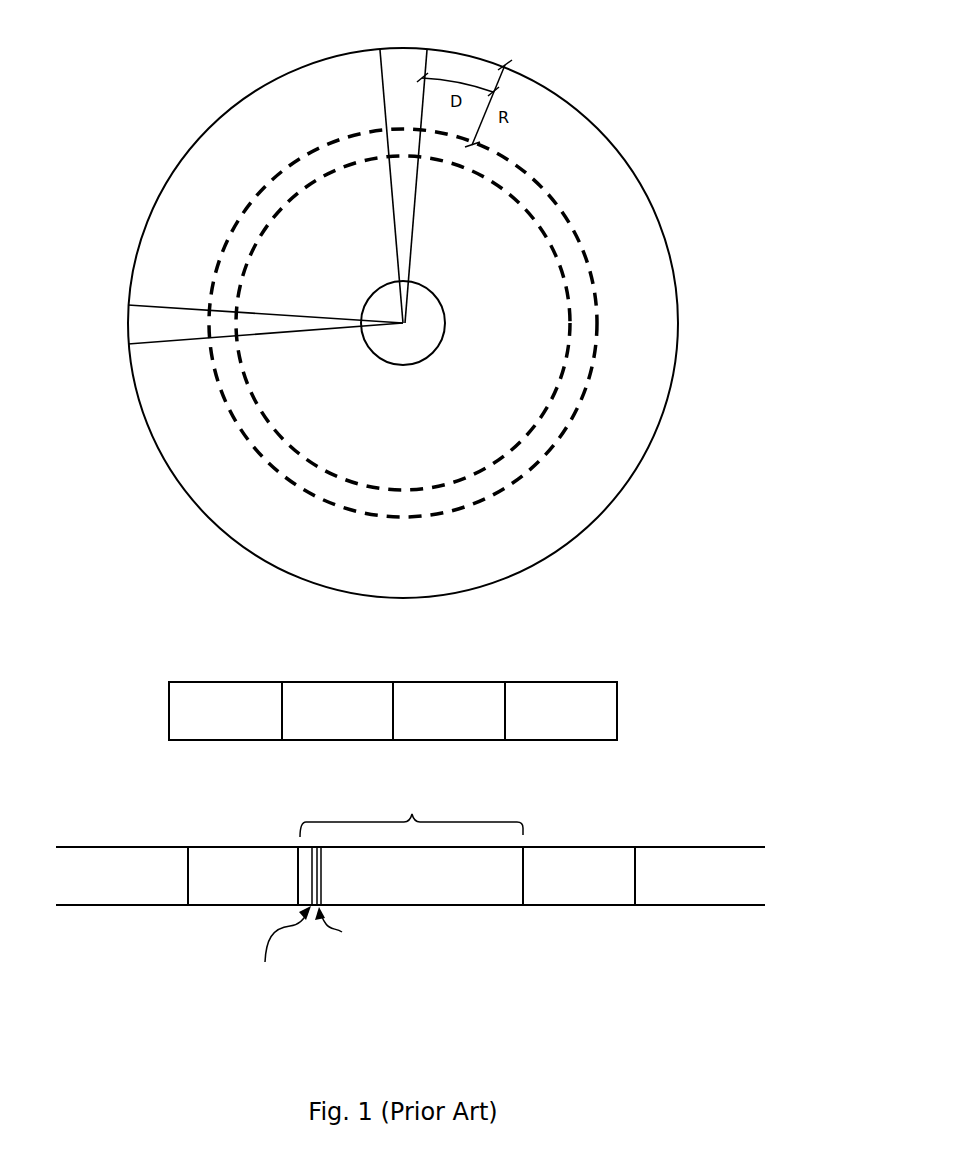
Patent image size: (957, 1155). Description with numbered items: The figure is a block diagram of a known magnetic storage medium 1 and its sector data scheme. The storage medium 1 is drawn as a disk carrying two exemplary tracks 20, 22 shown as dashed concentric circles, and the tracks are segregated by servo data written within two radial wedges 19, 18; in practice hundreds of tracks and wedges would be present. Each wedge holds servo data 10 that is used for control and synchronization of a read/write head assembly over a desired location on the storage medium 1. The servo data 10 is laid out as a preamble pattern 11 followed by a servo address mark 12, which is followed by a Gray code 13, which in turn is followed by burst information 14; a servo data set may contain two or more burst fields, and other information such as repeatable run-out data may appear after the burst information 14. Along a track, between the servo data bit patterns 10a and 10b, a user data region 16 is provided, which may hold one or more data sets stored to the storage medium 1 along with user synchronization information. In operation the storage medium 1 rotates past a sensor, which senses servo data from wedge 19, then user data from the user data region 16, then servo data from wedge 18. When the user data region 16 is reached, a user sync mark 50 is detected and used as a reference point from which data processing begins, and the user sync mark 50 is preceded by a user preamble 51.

The storage medium 1 is at (111, 86).
The wedge 18 is at (404, 50).
The wedge 19 is at (127, 322).
The track 20 is at (536, 224).
The track 22 is at (530, 176).
The servo data 10 is at (393, 683).
The preamble pattern 11 is at (216, 735).
The servo address mark 12 is at (328, 735).
The Gray code 13 is at (440, 735).
The burst information 14 is at (552, 735).
The servo data bit pattern 10a is at (230, 899).
The servo data bit pattern 10b is at (566, 899).
The user data region 16 is at (358, 792).
The user sync mark 50 is at (351, 985).
The user preamble 51 is at (254, 1013).